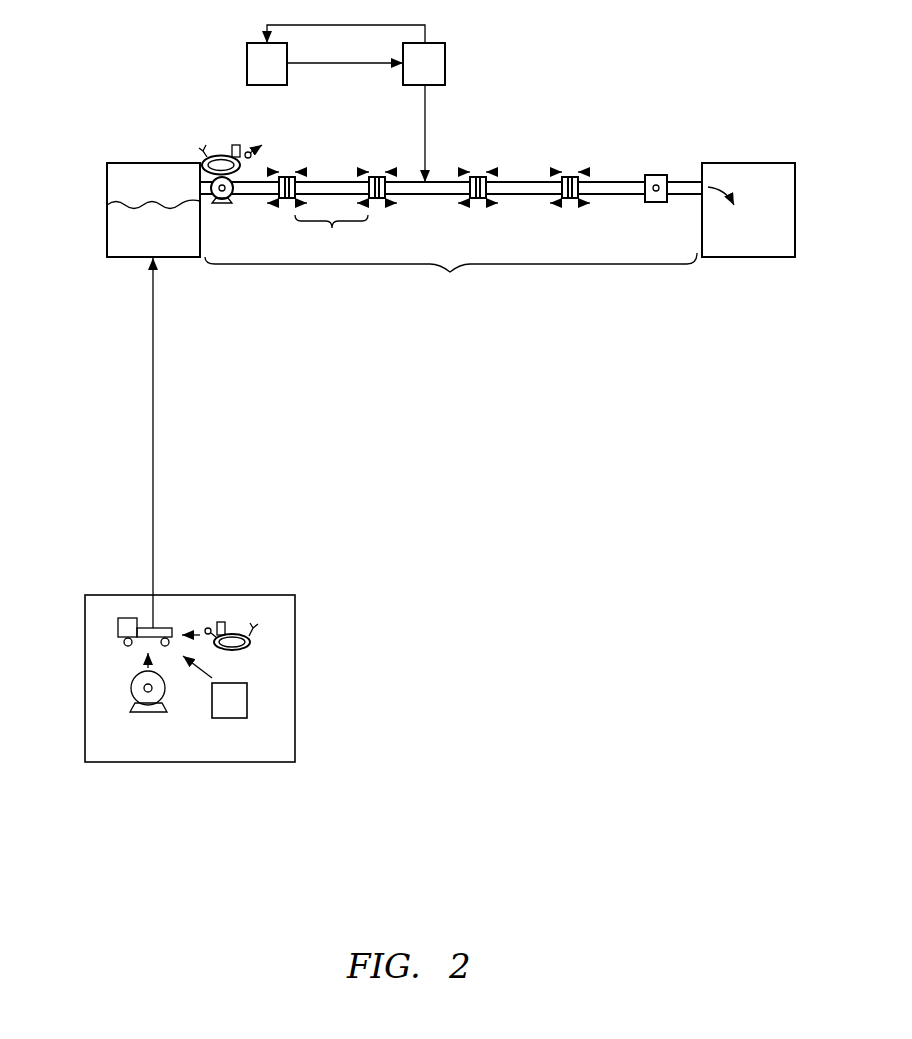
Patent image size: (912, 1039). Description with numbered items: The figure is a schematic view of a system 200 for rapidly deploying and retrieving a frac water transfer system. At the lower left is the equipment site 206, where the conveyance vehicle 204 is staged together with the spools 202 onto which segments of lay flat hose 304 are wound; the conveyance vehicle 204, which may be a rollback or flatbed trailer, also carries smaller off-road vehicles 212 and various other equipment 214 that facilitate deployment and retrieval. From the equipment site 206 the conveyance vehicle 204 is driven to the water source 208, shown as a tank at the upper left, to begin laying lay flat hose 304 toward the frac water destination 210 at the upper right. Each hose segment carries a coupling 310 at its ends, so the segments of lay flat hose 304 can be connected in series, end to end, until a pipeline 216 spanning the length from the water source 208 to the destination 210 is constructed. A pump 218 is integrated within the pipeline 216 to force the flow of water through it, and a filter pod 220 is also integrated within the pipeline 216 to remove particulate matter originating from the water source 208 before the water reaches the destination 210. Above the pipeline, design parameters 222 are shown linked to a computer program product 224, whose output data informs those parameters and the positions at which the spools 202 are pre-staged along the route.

The system 200 is at (737, 633).
The spool 202 is at (132, 693).
The conveyance vehicle 204 is at (118, 628).
The equipment site 206 is at (180, 783).
The water source 208 is at (107, 203).
The destination 210 is at (738, 163).
The off-road vehicle 212 is at (222, 155).
The equipment 214 is at (247, 705).
The pipeline 216 is at (451, 278).
The pump 218 is at (220, 203).
The filter pod 220 is at (655, 174).
The design parameters 222 is at (247, 70).
The computer program product 224 is at (447, 72).
The lay flat hose 304 is at (331, 236).
The coupling 310 is at (297, 174).